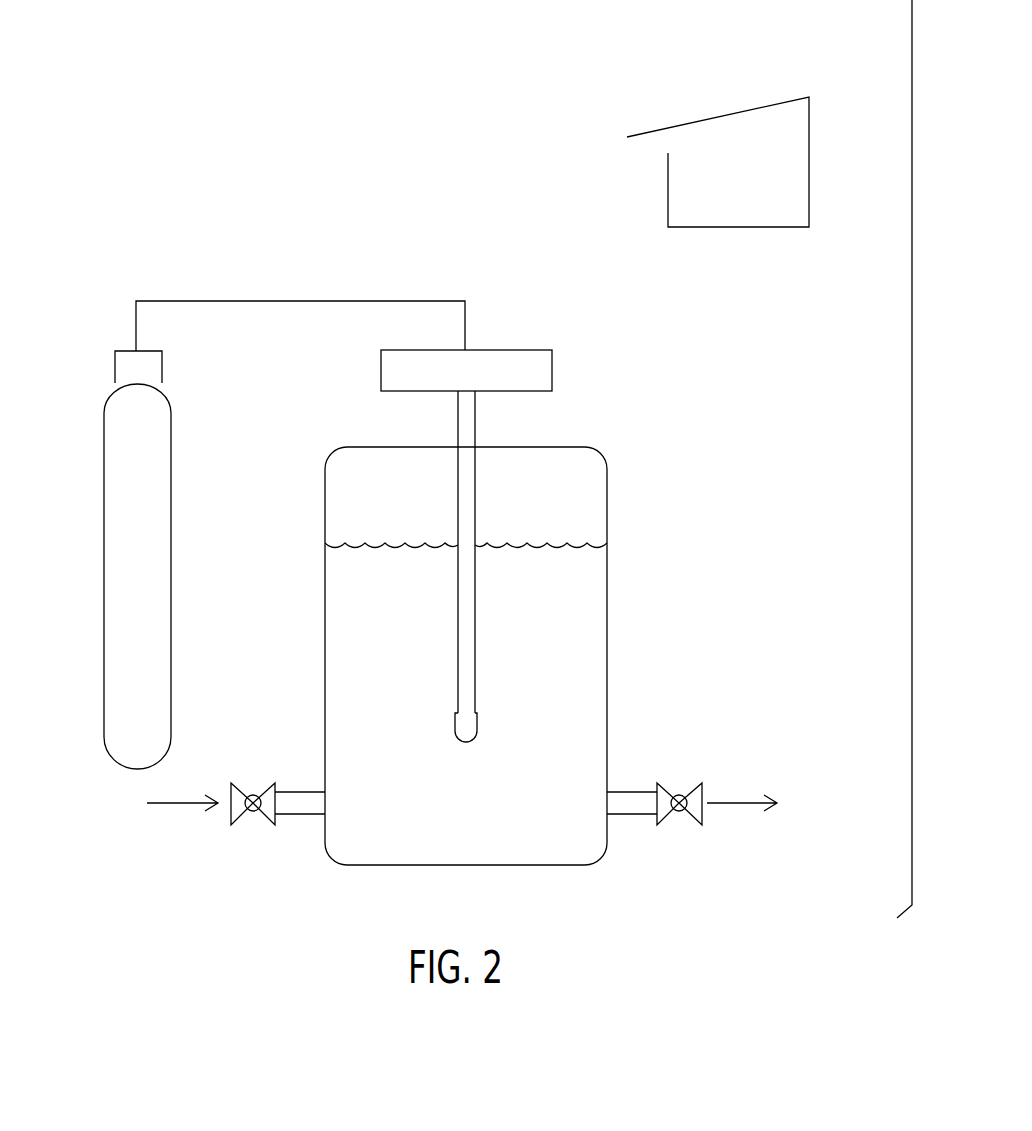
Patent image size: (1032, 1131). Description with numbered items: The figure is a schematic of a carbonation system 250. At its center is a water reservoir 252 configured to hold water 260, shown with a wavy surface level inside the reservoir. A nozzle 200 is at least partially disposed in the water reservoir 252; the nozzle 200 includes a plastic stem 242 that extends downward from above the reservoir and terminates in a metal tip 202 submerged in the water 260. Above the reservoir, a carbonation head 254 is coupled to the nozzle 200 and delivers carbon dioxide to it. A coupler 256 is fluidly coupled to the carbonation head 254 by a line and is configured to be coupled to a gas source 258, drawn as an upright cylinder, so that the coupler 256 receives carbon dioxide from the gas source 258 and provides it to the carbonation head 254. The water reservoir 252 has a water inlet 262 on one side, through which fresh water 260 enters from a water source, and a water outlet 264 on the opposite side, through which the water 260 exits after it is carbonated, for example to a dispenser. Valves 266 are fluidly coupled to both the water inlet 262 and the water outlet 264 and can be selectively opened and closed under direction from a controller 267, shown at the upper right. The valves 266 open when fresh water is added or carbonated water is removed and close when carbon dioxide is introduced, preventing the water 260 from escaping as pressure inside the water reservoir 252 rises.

The carbonation system 250 is at (786, 40).
The controller 267 is at (809, 128).
The coupler 256 is at (115, 370).
The gas source 258 is at (171, 458).
The carbonation head 254 is at (552, 370).
The plastic stem 242 is at (475, 425).
The water reservoir 252 is at (618, 489).
The water 260 is at (348, 618).
The nozzle 200 is at (576, 569).
The metal tip 202 is at (477, 722).
The water inlet 262 is at (303, 814).
The water outlet 264 is at (628, 814).
The valves 266 is at (254, 795).